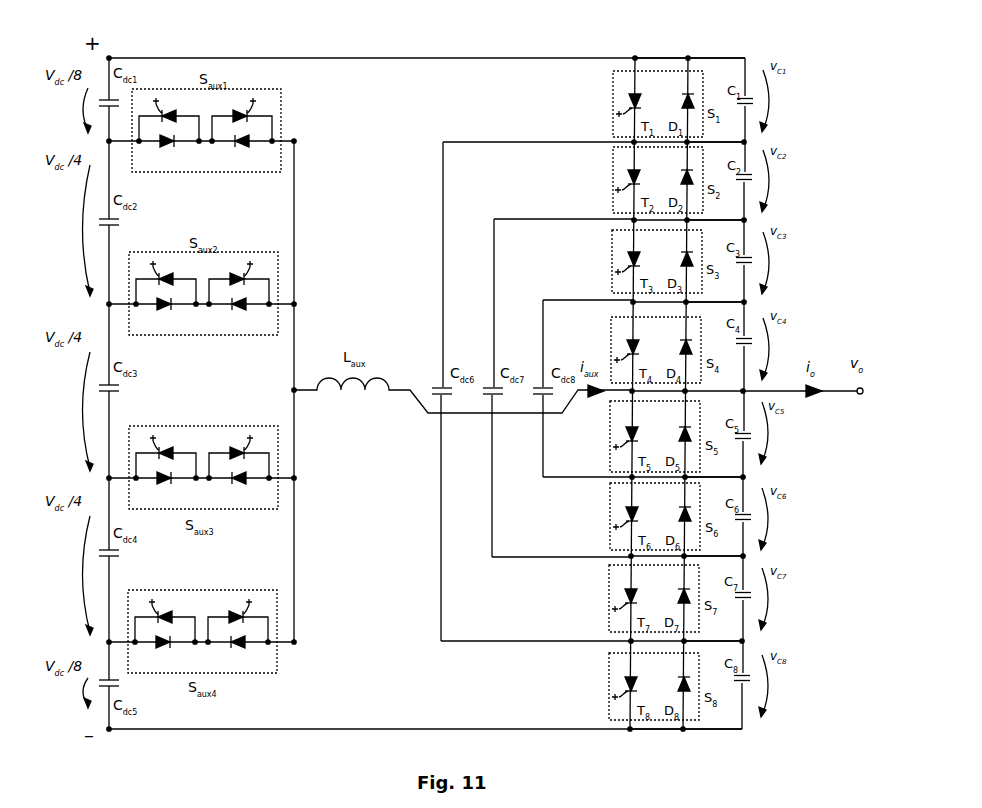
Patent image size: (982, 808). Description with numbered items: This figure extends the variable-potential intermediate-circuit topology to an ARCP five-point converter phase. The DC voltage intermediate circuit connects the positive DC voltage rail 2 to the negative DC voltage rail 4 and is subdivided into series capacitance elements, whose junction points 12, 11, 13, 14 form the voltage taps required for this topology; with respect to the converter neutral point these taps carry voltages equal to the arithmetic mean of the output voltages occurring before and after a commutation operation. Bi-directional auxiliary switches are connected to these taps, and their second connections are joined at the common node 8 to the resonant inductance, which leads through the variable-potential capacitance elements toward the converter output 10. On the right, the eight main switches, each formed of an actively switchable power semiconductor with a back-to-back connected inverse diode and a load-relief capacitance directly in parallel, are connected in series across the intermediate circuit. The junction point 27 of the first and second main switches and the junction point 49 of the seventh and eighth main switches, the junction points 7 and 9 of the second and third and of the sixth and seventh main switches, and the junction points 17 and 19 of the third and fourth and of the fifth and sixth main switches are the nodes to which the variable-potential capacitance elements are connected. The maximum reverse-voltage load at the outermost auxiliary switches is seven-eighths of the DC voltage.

The positive DC voltage rail 2 is at (470, 53).
The negative DC voltage rail 4 is at (451, 753).
The auxiliary switch common node 8 is at (316, 312).
The output terminal 10 is at (801, 384).
The DC link node between Cdc1 and Cdc2 12 is at (104, 149).
The DC link midpoint node 11 is at (104, 312).
The DC link node between Cdc3 and Cdc4 13 is at (104, 486).
The DC link node between Cdc4 and Cdc5 14 is at (104, 650).
The junction point 27 is at (743, 136).
The junction point 7 is at (742, 211).
The junction point 17 is at (743, 293).
The junction point 19 is at (742, 467).
The junction point 9 is at (741, 552).
The junction point 49 is at (741, 632).